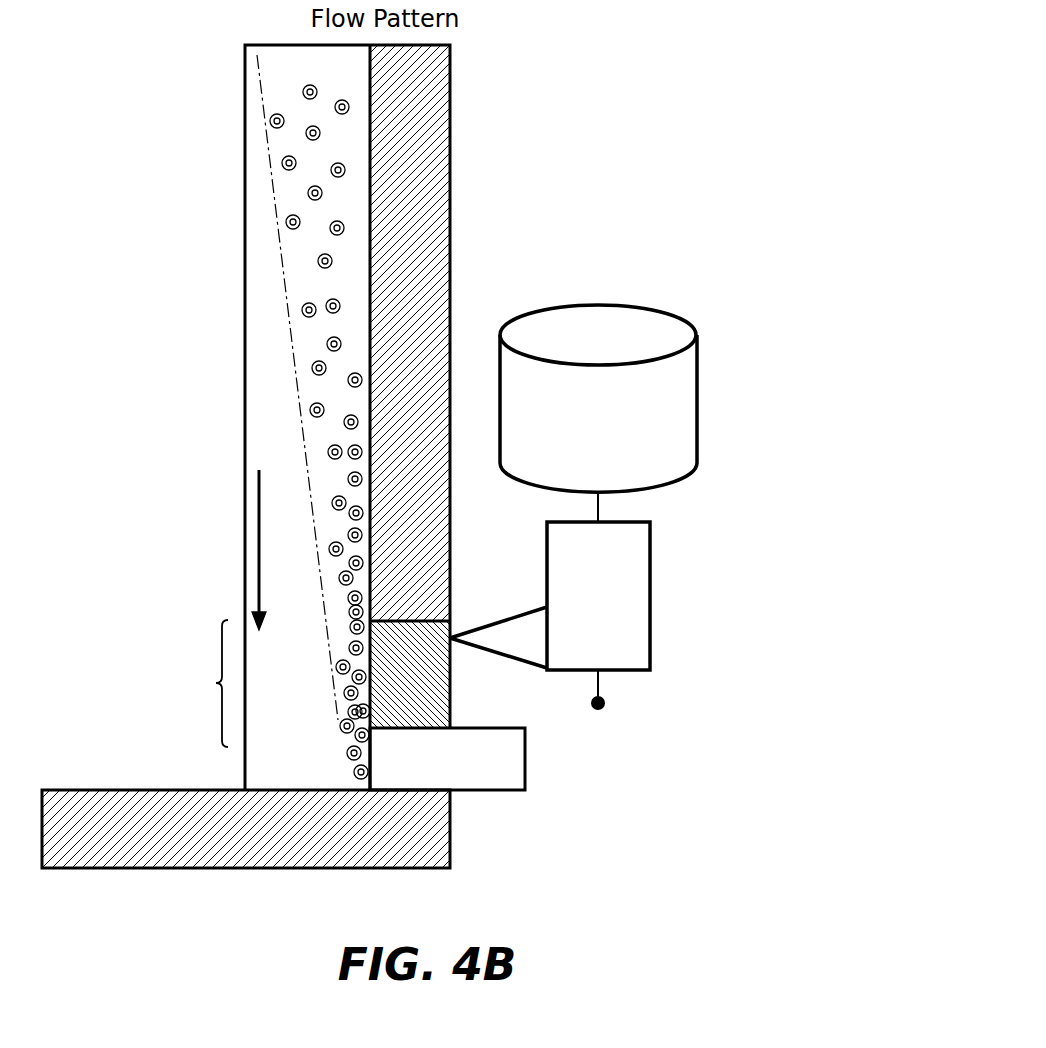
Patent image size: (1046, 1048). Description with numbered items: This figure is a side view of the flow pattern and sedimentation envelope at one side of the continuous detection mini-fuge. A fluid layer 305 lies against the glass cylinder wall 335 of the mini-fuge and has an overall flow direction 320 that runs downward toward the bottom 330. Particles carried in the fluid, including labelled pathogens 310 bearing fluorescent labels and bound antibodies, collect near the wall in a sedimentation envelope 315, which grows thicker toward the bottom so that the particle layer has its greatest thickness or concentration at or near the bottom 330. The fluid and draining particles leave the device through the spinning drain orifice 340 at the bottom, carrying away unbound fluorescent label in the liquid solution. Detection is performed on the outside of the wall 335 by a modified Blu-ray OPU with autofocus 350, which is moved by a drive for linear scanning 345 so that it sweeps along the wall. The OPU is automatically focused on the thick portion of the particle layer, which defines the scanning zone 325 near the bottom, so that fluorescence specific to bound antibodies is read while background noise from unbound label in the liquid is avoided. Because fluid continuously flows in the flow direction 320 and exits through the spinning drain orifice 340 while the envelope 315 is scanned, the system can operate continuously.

The fluid layer 305 is at (243, 124).
The labelled pathogen 310 is at (290, 226).
The sedimentation envelope 315 is at (300, 408).
The flow direction 320 is at (196, 550).
The scanning zone 325 is at (163, 683).
The bottom 330 is at (226, 843).
The glass cylinder wall 335 is at (452, 125).
The spinning drain orifice 340 is at (528, 763).
The drive for linear scanning 345 is at (699, 397).
The modified Blu-ray OPU with autofocus 350 is at (652, 590).